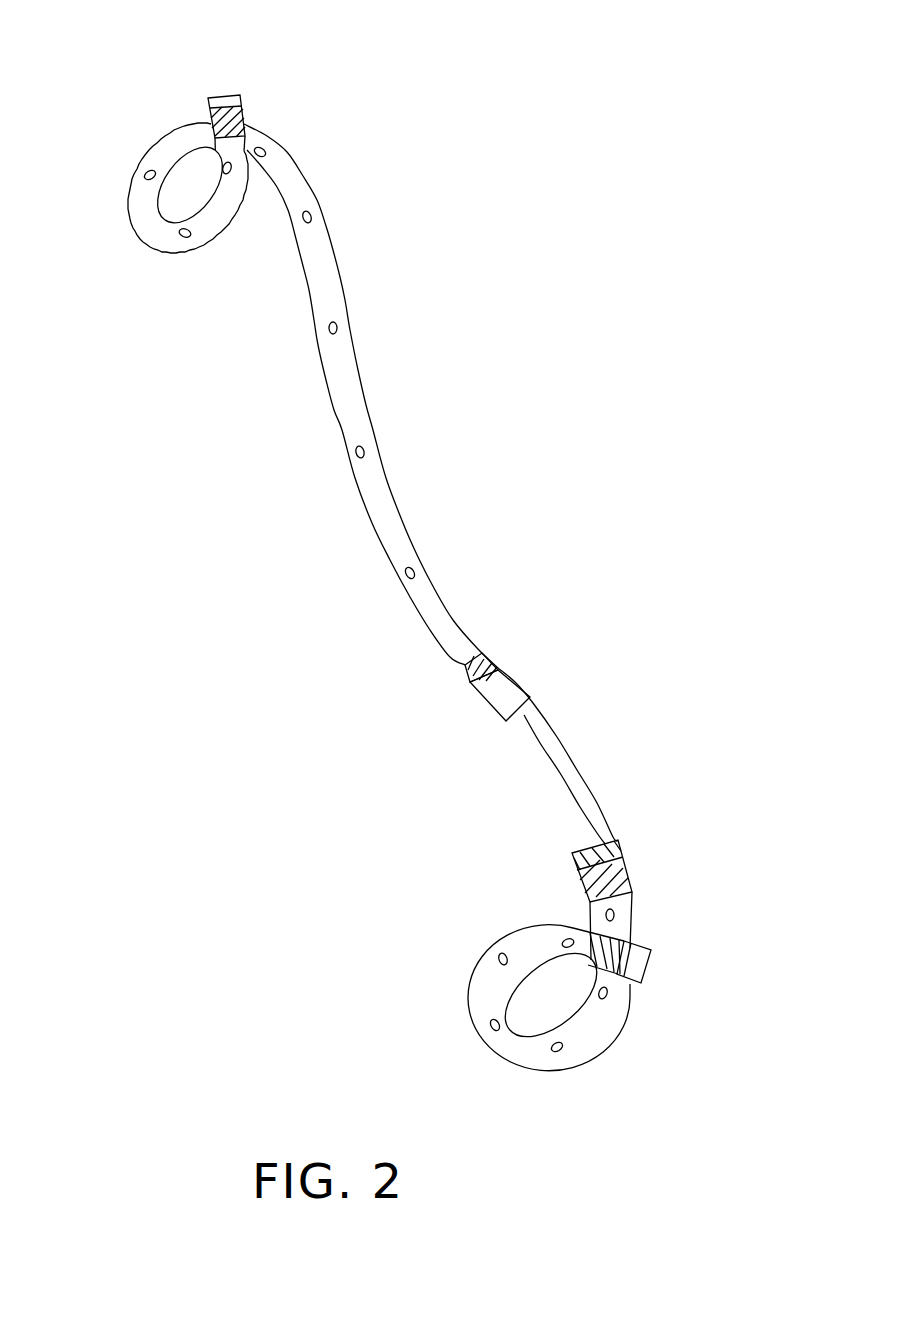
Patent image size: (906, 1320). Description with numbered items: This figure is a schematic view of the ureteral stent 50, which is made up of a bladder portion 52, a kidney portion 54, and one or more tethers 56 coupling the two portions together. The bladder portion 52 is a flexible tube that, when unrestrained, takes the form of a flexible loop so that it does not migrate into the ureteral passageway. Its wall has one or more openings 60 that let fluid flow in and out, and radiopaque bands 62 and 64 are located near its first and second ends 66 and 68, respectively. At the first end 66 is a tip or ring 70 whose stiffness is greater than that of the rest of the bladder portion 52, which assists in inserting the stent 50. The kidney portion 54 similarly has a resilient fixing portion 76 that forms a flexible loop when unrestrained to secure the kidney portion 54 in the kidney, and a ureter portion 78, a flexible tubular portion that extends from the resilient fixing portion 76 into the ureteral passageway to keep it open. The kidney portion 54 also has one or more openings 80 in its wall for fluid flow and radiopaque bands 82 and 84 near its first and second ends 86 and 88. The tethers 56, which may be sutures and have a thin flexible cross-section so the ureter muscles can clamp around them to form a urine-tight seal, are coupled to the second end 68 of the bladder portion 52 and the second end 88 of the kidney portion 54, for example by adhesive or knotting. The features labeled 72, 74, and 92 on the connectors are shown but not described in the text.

The ureteral stent 50 is at (590, 443).
The bladder portion 52 is at (608, 1044).
The kidney portion 54 is at (367, 337).
The tethers 56 is at (578, 752).
The openings 60 is at (614, 915).
The radiopaque band 62 is at (590, 928).
The radiopaque band 64 is at (626, 875).
The first end 66 is at (633, 940).
The second end 68 is at (577, 862).
The tip or ring 70 is at (648, 962).
The connector hatched region 72 is at (620, 848).
The connector hatched region 74 is at (583, 847).
The resilient fixing portion 76 is at (172, 138).
The ureter portion 78 is at (390, 478).
The openings 80 is at (307, 216).
The radiopaque band 82 is at (242, 116).
The radiopaque band 84 is at (466, 668).
The first end 86 is at (242, 92).
The second end 88 is at (503, 666).
The connector end portion 92 is at (515, 686).